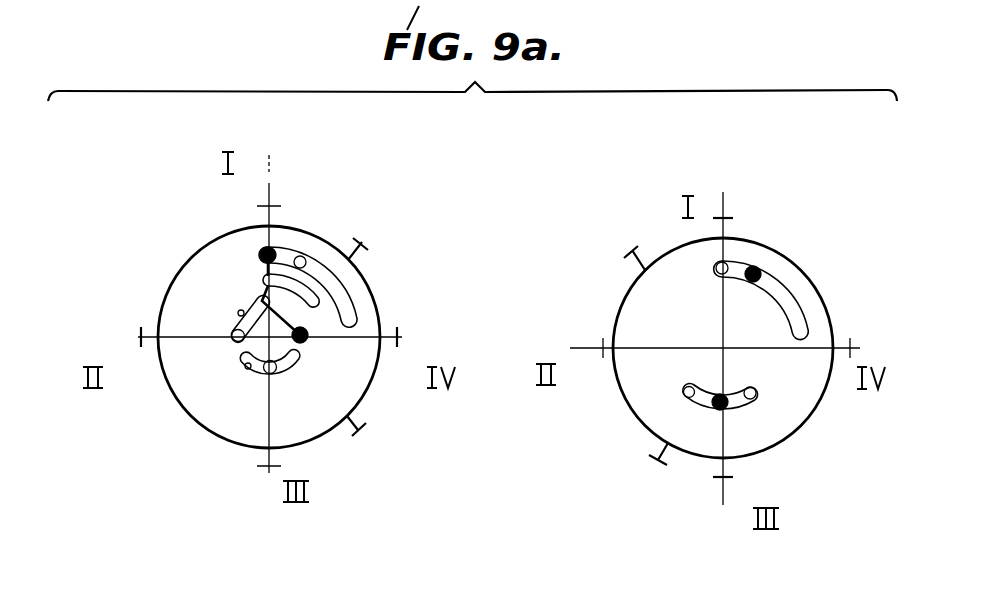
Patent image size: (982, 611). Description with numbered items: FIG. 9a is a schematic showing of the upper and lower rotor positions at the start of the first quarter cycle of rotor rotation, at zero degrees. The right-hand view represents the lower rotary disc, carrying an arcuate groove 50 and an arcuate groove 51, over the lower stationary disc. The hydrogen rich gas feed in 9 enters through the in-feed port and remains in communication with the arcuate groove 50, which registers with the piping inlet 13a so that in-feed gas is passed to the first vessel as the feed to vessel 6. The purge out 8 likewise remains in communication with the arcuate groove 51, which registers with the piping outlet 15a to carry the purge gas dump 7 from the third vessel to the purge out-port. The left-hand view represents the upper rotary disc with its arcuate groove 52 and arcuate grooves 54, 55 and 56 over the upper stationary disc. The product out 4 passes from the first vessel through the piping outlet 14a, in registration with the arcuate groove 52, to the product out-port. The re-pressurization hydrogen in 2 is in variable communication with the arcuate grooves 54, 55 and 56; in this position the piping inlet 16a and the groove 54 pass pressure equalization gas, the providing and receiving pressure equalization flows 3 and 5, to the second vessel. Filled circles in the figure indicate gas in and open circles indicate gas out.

The piping outlet 14a is at (303, 257).
The piping inlet 16a is at (304, 341).
The piping inlet 13a is at (758, 268).
The piping outlet 15a is at (754, 398).
The arcuate groove 50 is at (783, 291).
The arcuate groove 51 is at (687, 389).
The arcuate groove 52 is at (341, 286).
The arcuate groove 54 is at (238, 312).
The arcuate groove 55 is at (262, 276).
The arcuate groove 56 is at (245, 367).
The hydrogen in (re-pressurization) 2 is at (368, 234).
The pressure equalization (providing) 3 is at (419, 338).
The product out 4 is at (366, 445).
The pressure equalization 5 is at (116, 338).
The feed to vessel 6 is at (723, 190).
The purge gas from vessel (dump) 7 is at (723, 505).
The purge out 8 is at (645, 473).
The feed in (hydrogen rich gas) 9 is at (619, 241).